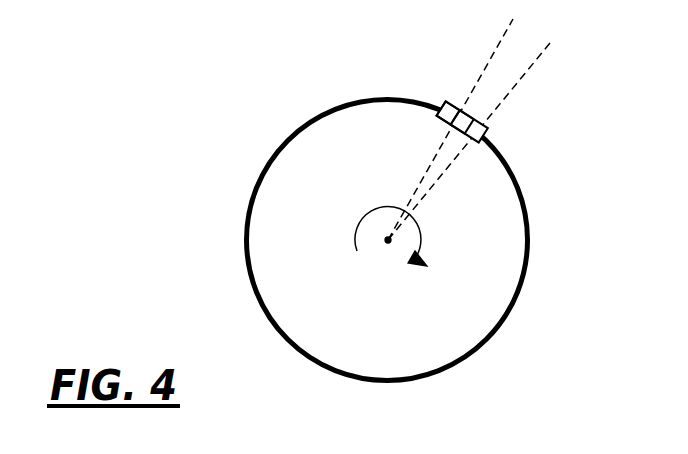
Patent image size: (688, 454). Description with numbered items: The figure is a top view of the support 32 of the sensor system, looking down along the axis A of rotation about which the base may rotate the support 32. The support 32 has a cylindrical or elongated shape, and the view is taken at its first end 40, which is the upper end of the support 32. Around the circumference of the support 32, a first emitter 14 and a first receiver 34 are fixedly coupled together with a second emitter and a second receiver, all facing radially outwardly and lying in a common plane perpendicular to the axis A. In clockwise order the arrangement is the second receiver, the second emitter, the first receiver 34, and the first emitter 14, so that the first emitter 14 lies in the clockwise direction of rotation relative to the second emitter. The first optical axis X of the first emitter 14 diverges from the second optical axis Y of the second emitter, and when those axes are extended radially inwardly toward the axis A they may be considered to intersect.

The first emitter 14 is at (489, 131).
The support 32 is at (213, 210).
The first receiver 34 is at (507, 112).
The first end 40 is at (317, 128).